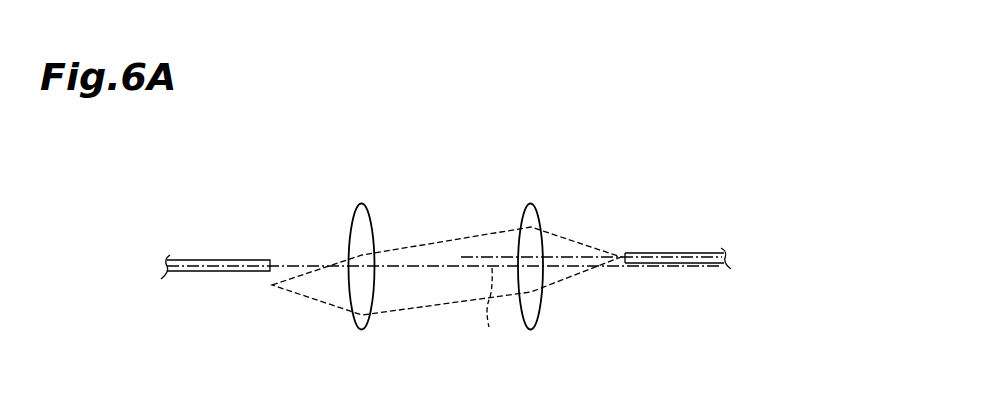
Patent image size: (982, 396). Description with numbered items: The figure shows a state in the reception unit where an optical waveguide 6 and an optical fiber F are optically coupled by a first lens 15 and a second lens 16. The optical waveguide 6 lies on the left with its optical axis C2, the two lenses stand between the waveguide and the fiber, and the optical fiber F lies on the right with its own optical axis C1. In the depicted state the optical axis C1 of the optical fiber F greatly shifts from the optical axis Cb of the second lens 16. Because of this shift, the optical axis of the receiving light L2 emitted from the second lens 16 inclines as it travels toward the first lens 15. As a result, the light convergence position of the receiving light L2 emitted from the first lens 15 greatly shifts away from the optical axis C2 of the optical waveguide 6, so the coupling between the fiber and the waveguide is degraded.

The optical waveguide 6 is at (214, 261).
The first lens 15 is at (369, 216).
The second lens 16 is at (538, 216).
The optical fiber F is at (683, 253).
The optical axis of the optical fiber C1 is at (495, 256).
The optical axis of the optical waveguide C2 is at (279, 265).
The optical axis of the second lens Cb is at (493, 310).
The receiving light L2 is at (425, 308).